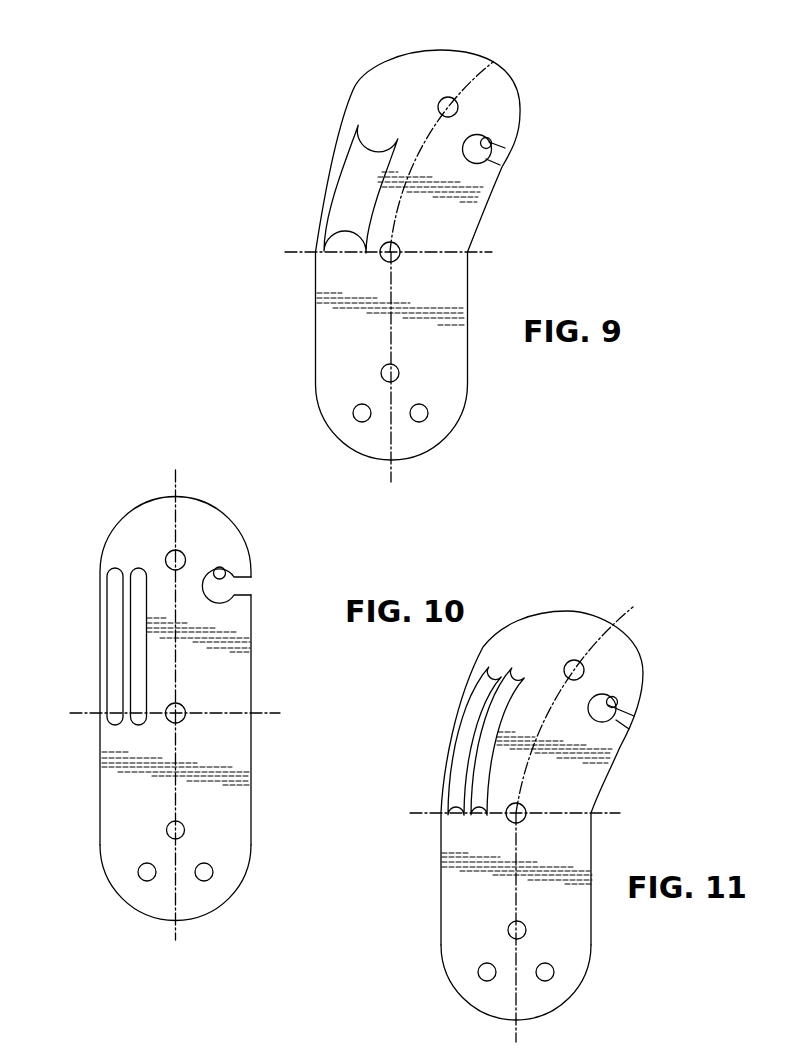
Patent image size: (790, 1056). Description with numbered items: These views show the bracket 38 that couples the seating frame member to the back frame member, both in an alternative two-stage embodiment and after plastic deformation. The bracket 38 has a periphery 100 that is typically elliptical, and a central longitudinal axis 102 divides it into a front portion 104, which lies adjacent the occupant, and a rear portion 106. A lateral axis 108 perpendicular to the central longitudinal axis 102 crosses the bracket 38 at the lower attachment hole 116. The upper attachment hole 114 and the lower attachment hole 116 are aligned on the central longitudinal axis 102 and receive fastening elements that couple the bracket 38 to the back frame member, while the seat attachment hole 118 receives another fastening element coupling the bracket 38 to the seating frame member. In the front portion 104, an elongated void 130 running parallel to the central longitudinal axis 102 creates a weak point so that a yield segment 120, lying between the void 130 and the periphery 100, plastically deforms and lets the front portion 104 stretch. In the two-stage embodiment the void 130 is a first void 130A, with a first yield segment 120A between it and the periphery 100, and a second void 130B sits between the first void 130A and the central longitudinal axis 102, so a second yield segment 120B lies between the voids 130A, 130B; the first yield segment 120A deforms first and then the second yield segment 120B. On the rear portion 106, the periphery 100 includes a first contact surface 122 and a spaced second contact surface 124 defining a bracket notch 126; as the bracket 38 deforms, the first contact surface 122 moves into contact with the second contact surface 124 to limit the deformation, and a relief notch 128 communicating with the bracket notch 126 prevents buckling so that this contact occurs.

In FIG. 9, the bracket 38 is at (306, 367).
In FIG. 10, the bracket 38 is at (88, 832).
In FIG. 11, the bracket 38 is at (424, 928).
In FIG. 9, the periphery 100 is at (519, 92).
In FIG. 10, the periphery 100 is at (216, 506).
In FIG. 11, the periphery 100 is at (633, 640).
In FIG. 9, the central longitudinal axis 102 is at (497, 60).
In FIG. 10, the central longitudinal axis 102 is at (170, 488).
In FIG. 11, the central longitudinal axis 102 is at (617, 617).
In FIG. 9, the front portion 104 is at (357, 80).
In FIG. 10, the front portion 104 is at (94, 524).
In FIG. 11, the front portion 104 is at (476, 638).
In FIG. 9, the rear portion 106 is at (492, 199).
In FIG. 10, the rear portion 106 is at (261, 667).
In FIG. 11, the rear portion 106 is at (615, 767).
In FIG. 9, the lateral axis 108 is at (485, 262).
In FIG. 10, the lateral axis 108 is at (263, 714).
In FIG. 11, the lateral axis 108 is at (600, 815).
In FIG. 9, the upper attachment hole 114 is at (440, 100).
In FIG. 10, the upper attachment hole 114 is at (167, 552).
In FIG. 11, the upper attachment hole 114 is at (584, 674).
In FIG. 9, the lower attachment hole 116 is at (398, 244).
In FIG. 10, the lower attachment hole 116 is at (182, 705).
In FIG. 11, the lower attachment hole 116 is at (522, 822).
In FIG. 9, the seat attachment hole 118 is at (371, 408).
In FIG. 10, the seat attachment hole 118 is at (157, 871).
In FIG. 11, the seat attachment hole 118 is at (496, 971).
In FIG. 9, the yield segment 120 is at (340, 168).
In FIG. 10, the first yield segment 120A is at (100, 645).
In FIG. 11, the first yield segment 120A is at (456, 736).
In FIG. 10, the second yield segment 120B is at (127, 662).
In FIG. 11, the second yield segment 120B is at (492, 712).
In FIG. 9, the first contact surface 122 is at (491, 150).
In FIG. 10, the first contact surface 122 is at (246, 573).
In FIG. 11, the first contact surface 122 is at (616, 710).
In FIG. 9, the second contact surface 124 is at (503, 163).
In FIG. 10, the second contact surface 124 is at (250, 596).
In FIG. 11, the second contact surface 124 is at (631, 725).
In FIG. 10, the bracket notch 126 is at (244, 583).
In FIG. 9, the relief notch 128 is at (490, 144).
In FIG. 10, the relief notch 128 is at (219, 566).
In FIG. 11, the relief notch 128 is at (618, 700).
In FIG. 9, the void 130 is at (337, 205).
In FIG. 10, the first void 130A is at (112, 614).
In FIG. 11, the first void 130A is at (454, 808).
In FIG. 10, the second void 130B is at (136, 608).
In FIG. 11, the second void 130B is at (480, 780).